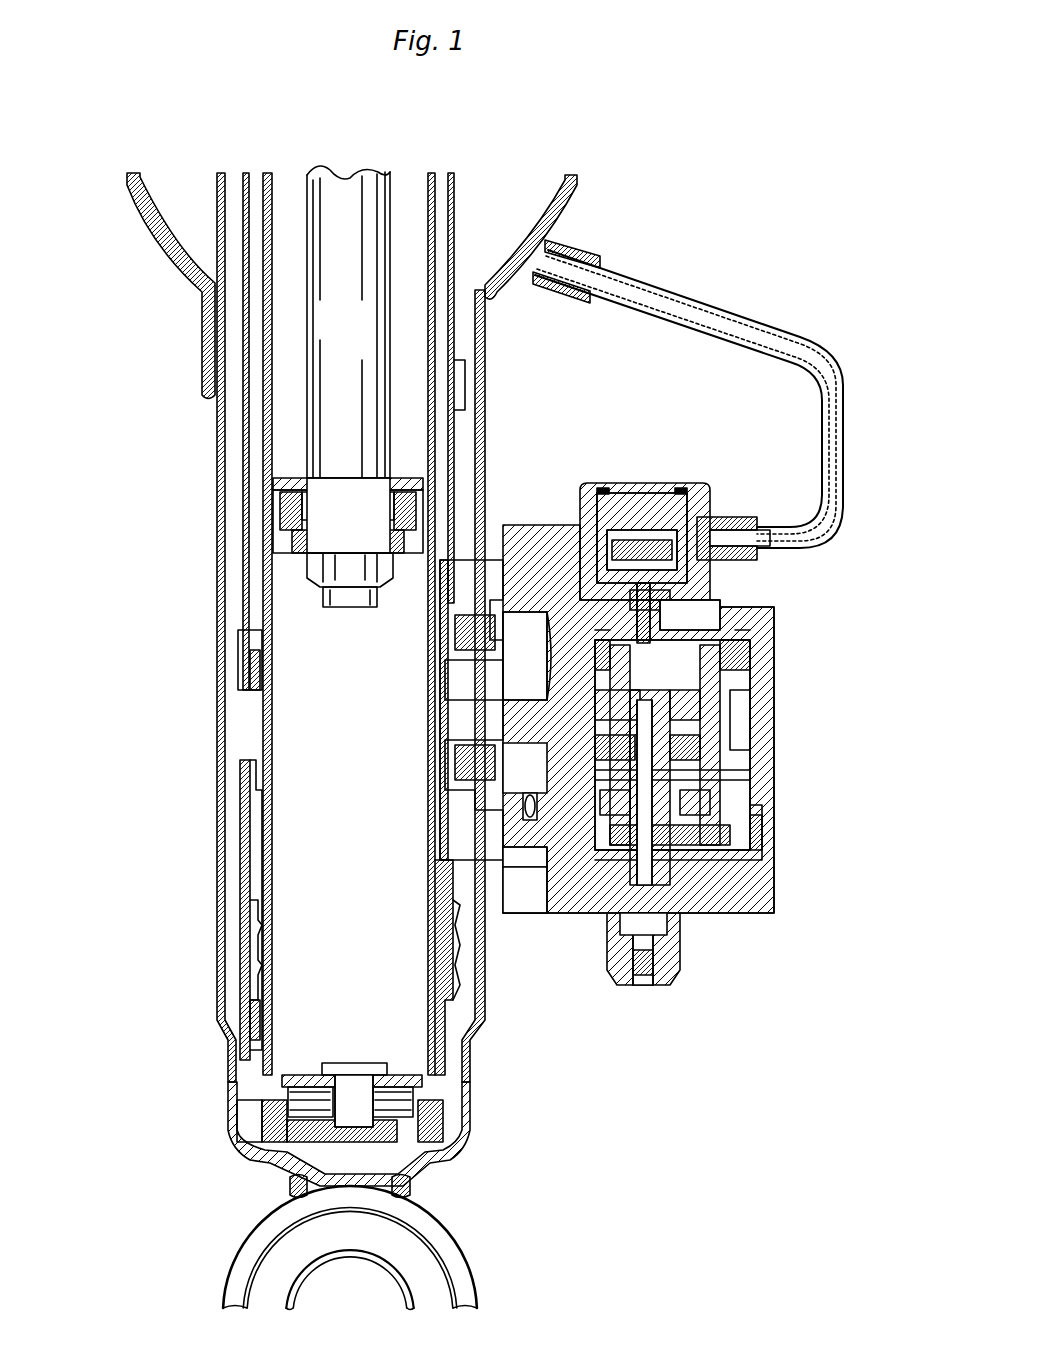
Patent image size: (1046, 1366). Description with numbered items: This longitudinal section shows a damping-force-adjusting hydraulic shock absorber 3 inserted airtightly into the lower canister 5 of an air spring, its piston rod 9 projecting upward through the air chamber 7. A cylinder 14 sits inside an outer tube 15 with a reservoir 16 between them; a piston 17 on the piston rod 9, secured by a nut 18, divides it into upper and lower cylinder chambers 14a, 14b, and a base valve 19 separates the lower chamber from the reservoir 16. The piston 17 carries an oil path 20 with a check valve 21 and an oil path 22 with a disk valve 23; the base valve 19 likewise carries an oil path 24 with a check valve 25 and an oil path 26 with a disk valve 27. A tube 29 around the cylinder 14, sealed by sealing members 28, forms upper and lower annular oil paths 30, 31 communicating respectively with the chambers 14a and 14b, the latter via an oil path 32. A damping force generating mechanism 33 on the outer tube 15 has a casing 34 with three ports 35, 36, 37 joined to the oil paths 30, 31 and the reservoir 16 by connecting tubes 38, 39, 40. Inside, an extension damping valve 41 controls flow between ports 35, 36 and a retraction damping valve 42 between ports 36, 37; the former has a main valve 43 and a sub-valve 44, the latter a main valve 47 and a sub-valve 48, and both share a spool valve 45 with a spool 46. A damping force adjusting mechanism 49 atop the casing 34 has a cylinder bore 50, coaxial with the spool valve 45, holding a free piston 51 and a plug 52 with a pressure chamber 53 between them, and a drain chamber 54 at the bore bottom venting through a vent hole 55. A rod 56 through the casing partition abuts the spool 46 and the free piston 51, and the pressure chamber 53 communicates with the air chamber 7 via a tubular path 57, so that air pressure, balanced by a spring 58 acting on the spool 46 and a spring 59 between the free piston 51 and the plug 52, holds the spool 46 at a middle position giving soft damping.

The hydraulic shock absorber 3 is at (217, 752).
The lower canister 5 is at (568, 190).
The air chamber 7 is at (523, 213).
The piston rod 9 is at (323, 200).
The cylinder 14 is at (432, 185).
The upper cylinder chamber 14a is at (285, 320).
The lower cylinder chamber 14b is at (292, 810).
The outer tube 15 is at (452, 182).
The reservoir 16 is at (218, 183).
The piston 17 is at (306, 512).
The nut 18 is at (247, 640).
The base valve 19 is at (440, 1120).
The oil path 20 is at (284, 500).
The check valve 21 is at (276, 495).
The oil path 22 is at (306, 560).
The disk valve 23 is at (292, 570).
The oil path 24 is at (272, 1118).
The check valve 25 is at (262, 1092).
The oil path 26 is at (448, 1100).
The disk valve 27 is at (450, 1152).
The sealing member 28 is at (249, 690).
The tube 29 is at (246, 183).
The upper annular oil path 30 is at (442, 362).
The lower annular oil path 31 is at (262, 905).
The oil path 32 is at (258, 962).
The damping force generating mechanism 33 is at (668, 987).
The casing 34 is at (782, 890).
The port 35 is at (516, 640).
The port 36 is at (521, 715).
The port 37 is at (530, 822).
The connecting tube 38 is at (463, 650).
The connecting tube 39 is at (487, 700).
The connecting tube 40 is at (493, 862).
The damping valve 41 is at (752, 705).
The damping valve 42 is at (772, 832).
The main valve 43 is at (762, 740).
The sub-valve 44 is at (760, 690).
The spool valve 45 is at (738, 776).
The spool 46 is at (654, 905).
The main valve 47 is at (752, 842).
The sub-valve 48 is at (758, 802).
The damping force adjusting mechanism 49 is at (660, 485).
The cylinder bore 50 is at (692, 602).
The free piston 51 is at (648, 555).
The plug 52 is at (670, 560).
The pressure chamber 53 is at (702, 500).
The drain chamber 54 is at (736, 632).
The vent hole 55 is at (737, 600).
The rod 56 is at (636, 590).
The tubular path 57 is at (797, 336).
The spring 58 is at (604, 905).
The spring 59 is at (732, 533).